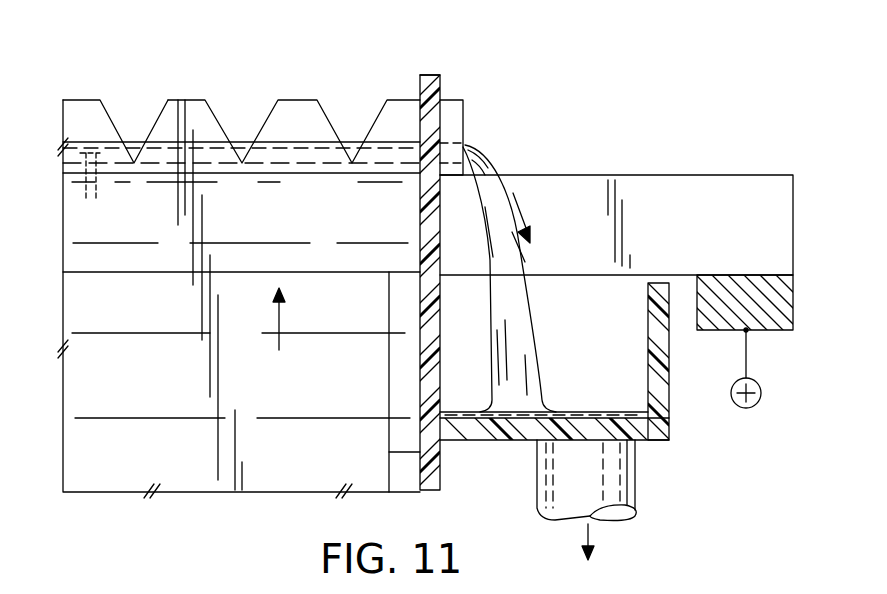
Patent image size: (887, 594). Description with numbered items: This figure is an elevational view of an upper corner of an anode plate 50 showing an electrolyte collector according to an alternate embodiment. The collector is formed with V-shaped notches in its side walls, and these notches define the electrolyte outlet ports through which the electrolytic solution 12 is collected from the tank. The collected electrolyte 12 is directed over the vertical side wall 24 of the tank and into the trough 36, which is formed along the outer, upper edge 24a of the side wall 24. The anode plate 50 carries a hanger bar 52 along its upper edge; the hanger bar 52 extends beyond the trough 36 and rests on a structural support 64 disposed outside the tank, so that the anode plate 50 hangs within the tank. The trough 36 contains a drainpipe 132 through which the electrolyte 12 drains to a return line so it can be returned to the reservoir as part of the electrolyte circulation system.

The electrolytic solution 12 is at (242, 160).
The side wall 24 is at (442, 475).
The upper edge of side wall 24a is at (430, 75).
The trough 36 is at (617, 306).
The anode plate 50 is at (440, 452).
The hanger bar 52 is at (688, 193).
The structural support 64 is at (723, 313).
The drainpipe 132 is at (633, 464).